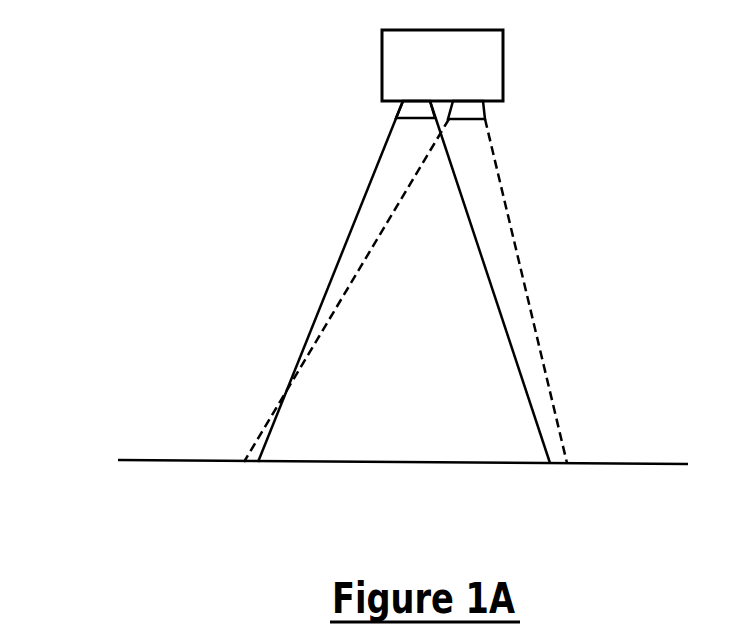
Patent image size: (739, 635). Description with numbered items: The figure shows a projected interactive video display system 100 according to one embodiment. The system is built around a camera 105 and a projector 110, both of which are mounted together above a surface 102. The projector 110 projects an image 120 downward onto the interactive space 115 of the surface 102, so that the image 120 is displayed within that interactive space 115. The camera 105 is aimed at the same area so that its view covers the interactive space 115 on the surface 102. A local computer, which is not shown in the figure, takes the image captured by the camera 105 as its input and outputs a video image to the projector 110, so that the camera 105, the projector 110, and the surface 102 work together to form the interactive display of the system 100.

The projected interactive video display system 100 is at (72, 40).
The surface 102 is at (678, 500).
The camera 105 is at (486, 114).
The projector 110 is at (398, 112).
The interactive space 115 is at (610, 282).
The image 120 is at (340, 249).